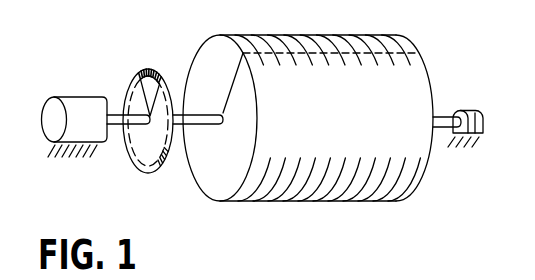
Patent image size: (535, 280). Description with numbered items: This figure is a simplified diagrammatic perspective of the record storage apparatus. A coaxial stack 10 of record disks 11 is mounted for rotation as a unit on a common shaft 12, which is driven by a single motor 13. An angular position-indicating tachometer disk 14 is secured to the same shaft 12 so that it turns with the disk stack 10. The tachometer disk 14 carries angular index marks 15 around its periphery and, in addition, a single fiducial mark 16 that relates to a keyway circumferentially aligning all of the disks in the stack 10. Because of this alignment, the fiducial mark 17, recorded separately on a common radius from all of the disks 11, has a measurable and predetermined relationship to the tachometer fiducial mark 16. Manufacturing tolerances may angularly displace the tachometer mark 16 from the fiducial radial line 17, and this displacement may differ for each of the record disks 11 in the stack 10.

The coaxial stack 10 is at (399, 33).
The record disks 11 is at (287, 203).
The common shaft 12 is at (190, 126).
The motor 13 is at (67, 97).
The tachometer disk 14 is at (131, 86).
The angular index marks 15 is at (159, 162).
The fiducial mark 16 is at (141, 78).
The fiducial mark 17 is at (234, 82).